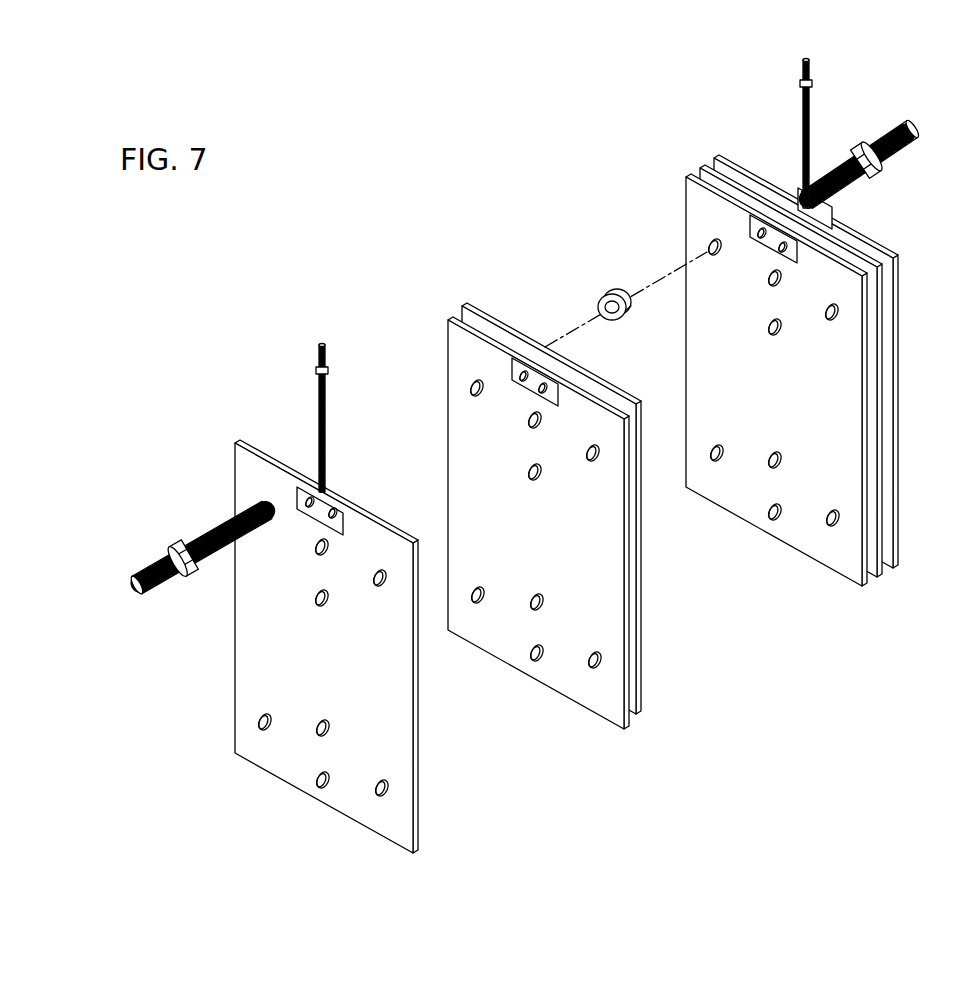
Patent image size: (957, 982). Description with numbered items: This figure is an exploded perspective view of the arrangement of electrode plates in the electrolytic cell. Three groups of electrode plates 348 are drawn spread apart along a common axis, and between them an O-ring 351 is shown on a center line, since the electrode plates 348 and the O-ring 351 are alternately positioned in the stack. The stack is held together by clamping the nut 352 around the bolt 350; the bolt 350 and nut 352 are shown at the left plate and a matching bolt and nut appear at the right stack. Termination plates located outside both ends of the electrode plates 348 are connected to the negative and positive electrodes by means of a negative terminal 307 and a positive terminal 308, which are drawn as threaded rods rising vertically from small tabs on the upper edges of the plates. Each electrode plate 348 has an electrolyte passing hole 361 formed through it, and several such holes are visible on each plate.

The negative terminal 307 is at (808, 122).
The positive terminal 308 is at (318, 358).
The electrode plate 348 is at (248, 650).
The bolt 350 is at (137, 592).
The O-ring 351 is at (612, 293).
The nut 352 is at (180, 548).
The electrolyte passing hole 361 is at (323, 778).